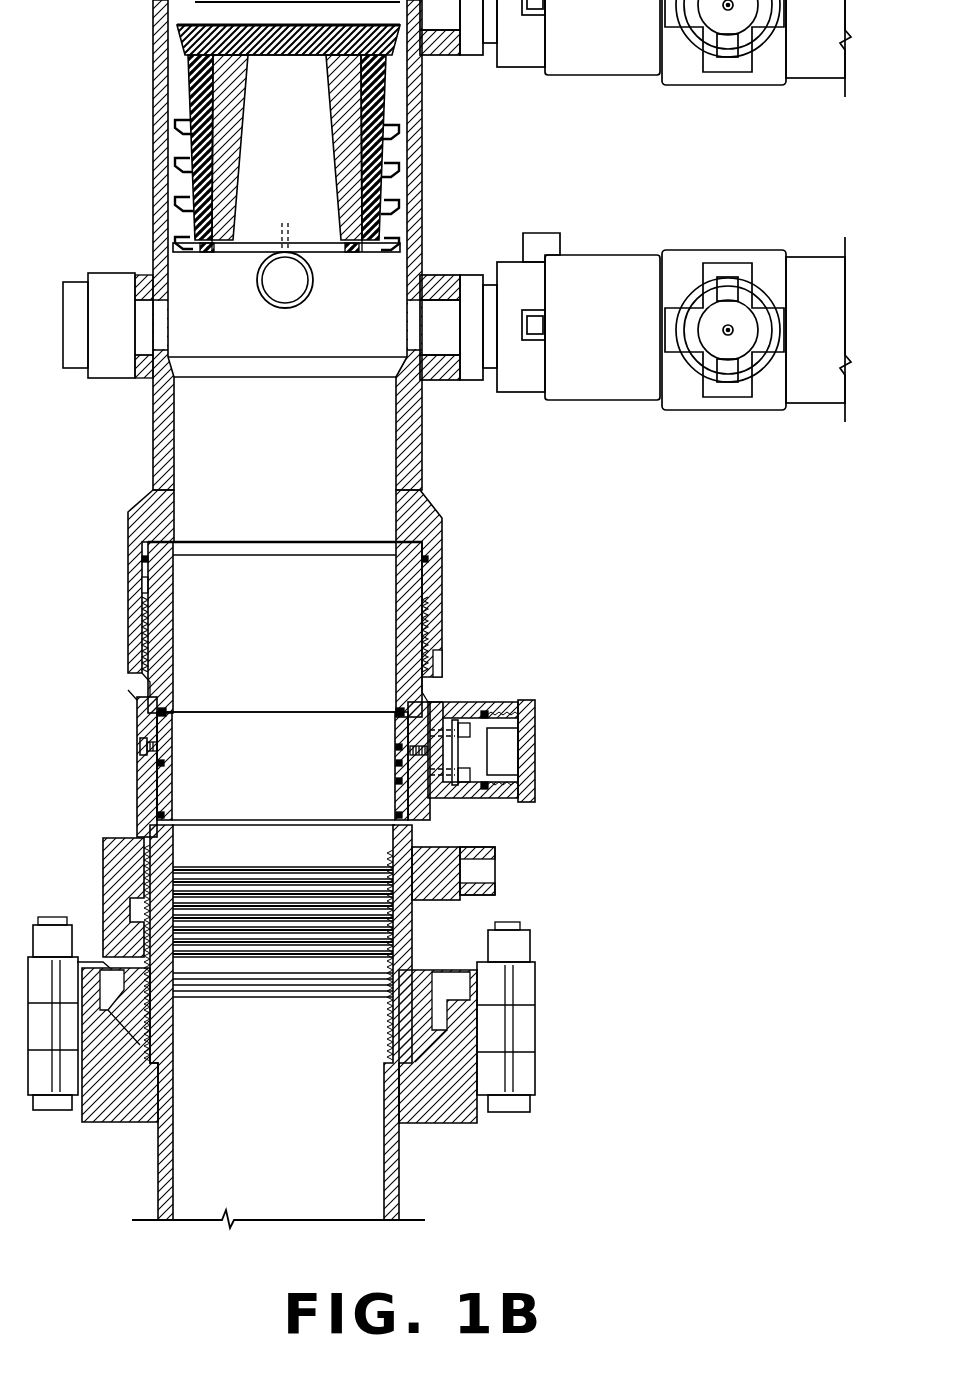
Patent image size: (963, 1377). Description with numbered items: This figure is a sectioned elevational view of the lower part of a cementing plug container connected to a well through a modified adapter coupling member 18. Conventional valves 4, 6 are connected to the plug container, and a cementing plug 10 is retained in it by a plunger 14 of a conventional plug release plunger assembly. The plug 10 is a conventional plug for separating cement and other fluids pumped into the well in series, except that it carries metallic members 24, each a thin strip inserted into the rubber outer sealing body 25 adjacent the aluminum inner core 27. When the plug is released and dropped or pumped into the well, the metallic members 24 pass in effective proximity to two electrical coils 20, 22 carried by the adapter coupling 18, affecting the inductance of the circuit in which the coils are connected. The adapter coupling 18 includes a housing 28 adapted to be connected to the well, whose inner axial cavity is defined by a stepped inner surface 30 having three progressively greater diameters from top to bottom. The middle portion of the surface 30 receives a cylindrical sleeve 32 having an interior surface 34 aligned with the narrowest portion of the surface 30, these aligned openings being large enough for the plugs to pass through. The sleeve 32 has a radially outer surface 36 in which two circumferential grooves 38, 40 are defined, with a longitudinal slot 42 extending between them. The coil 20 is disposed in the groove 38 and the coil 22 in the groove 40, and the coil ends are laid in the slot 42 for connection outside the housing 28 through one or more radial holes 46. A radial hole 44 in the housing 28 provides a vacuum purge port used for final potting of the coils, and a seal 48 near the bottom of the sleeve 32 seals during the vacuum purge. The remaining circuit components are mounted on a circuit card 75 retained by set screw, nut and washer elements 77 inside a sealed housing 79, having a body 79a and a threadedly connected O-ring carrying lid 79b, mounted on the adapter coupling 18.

The valve 4 is at (600, 400).
The valve 6 is at (598, 77).
The cementing plug 10 is at (185, 70).
The plunger 14 is at (285, 293).
The adapter coupling member 18 is at (122, 692).
The electrical coil 20 is at (398, 712).
The electrical coil 22 is at (400, 770).
The metallic member 24 is at (215, 254).
The outer sealing body 25 is at (195, 137).
The inner core 27 is at (340, 153).
The housing 28 is at (158, 668).
The stepped inner surface 30 is at (177, 572).
The cylindrical sleeve 32 is at (165, 790).
The interior surface 34 is at (400, 780).
The radially outer surface 36 is at (150, 798).
The circumferential groove 38 is at (182, 716).
The circumferential groove 40 is at (180, 760).
The longitudinal slot 42 is at (400, 764).
The radial hole 44 is at (138, 748).
The radial hole 46 is at (402, 752).
The seal 48 is at (400, 808).
The circuit card 75 is at (462, 757).
The set screw/nut/washer elements 77 is at (470, 725).
The sealed housing 79 is at (490, 688).
The body 79a is at (463, 702).
The O-ring carrying lid 79b is at (527, 750).